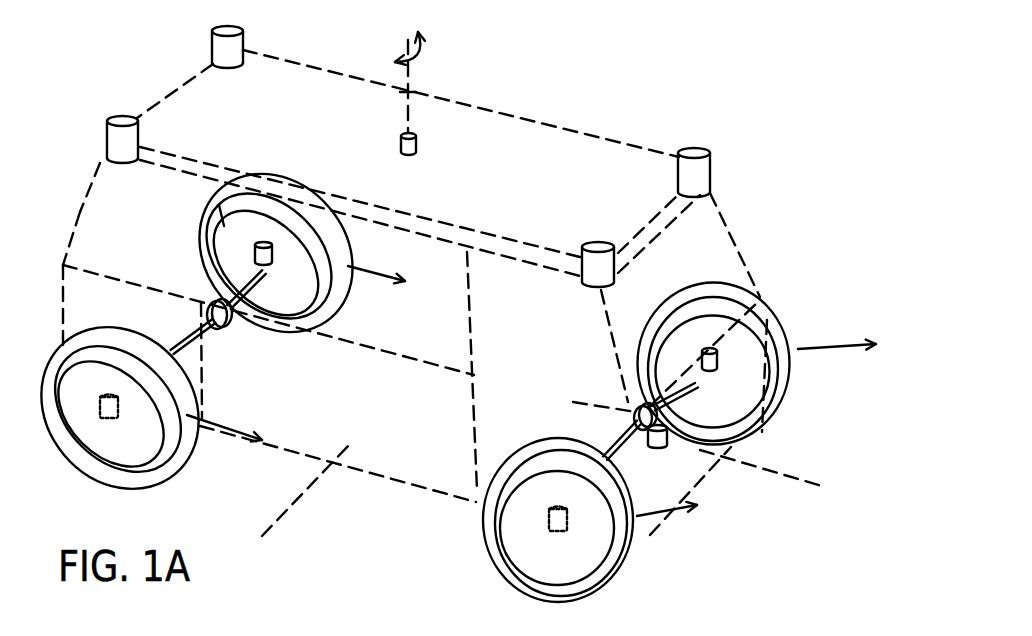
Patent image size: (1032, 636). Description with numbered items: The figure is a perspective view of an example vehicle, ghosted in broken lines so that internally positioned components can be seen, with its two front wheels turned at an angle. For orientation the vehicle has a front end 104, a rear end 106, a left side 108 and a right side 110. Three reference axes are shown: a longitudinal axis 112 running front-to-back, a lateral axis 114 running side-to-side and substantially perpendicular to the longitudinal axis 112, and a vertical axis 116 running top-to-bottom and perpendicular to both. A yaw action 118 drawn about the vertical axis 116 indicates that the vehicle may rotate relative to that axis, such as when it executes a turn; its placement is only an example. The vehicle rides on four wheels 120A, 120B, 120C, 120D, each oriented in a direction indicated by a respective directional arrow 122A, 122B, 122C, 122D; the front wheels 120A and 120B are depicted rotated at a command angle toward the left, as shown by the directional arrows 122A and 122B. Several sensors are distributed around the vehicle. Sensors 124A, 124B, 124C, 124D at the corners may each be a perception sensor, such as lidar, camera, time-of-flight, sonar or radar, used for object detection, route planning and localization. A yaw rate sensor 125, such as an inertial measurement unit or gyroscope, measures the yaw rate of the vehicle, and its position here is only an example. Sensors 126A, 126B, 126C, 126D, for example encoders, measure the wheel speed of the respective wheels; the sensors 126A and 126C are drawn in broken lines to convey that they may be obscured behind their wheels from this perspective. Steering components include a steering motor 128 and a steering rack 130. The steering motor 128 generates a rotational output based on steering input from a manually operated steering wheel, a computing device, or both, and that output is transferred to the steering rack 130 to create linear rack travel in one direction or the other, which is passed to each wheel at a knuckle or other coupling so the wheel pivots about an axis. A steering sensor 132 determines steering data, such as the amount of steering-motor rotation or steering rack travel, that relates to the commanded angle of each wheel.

The front end 104 is at (710, 253).
The rear end 106 is at (83, 160).
The left side 108 is at (570, 118).
The right side 110 is at (107, 302).
The longitudinal axis 112 is at (805, 477).
The lateral axis 114 is at (290, 504).
The vertical axis 116 is at (407, 117).
The yaw action 118 is at (426, 49).
The wheel 120A is at (497, 579).
The wheel 120B is at (788, 389).
The wheel 120C is at (160, 483).
The wheel 120D is at (200, 245).
The directional arrow 122A is at (673, 517).
The directional arrow 122B is at (832, 347).
The directional arrow 122C is at (228, 425).
The directional arrow 122D is at (368, 275).
The sensor 124A is at (597, 242).
The sensor 124B is at (692, 150).
The sensor 124C is at (122, 117).
The sensor 124D is at (211, 42).
The yaw rate sensor 125 is at (416, 147).
The sensor 126A is at (549, 520).
The sensor 126B is at (717, 362).
The sensor 126C is at (110, 418).
The sensor 126D is at (272, 253).
The steering motor 128 is at (634, 418).
The steering rack 130 is at (625, 444).
The steering sensor 132 is at (662, 443).